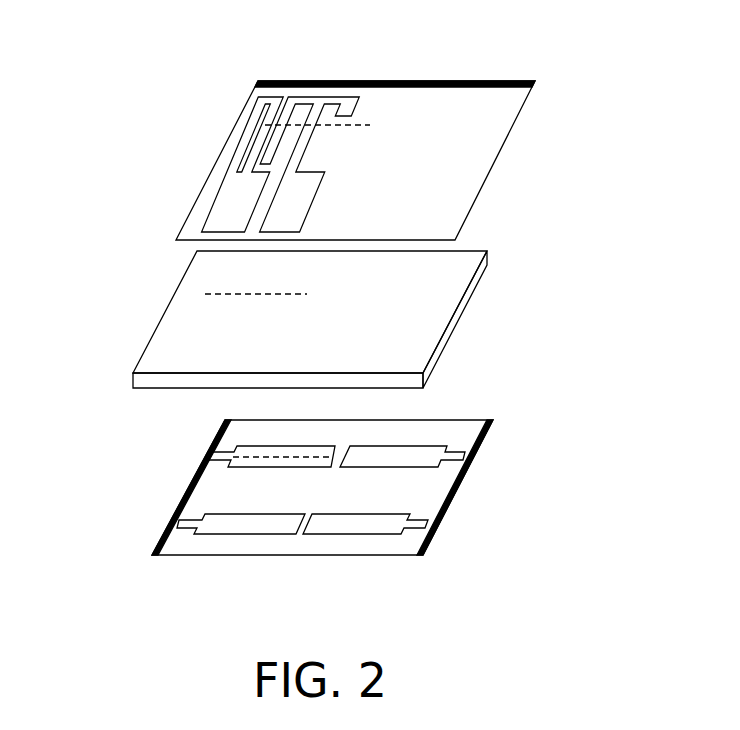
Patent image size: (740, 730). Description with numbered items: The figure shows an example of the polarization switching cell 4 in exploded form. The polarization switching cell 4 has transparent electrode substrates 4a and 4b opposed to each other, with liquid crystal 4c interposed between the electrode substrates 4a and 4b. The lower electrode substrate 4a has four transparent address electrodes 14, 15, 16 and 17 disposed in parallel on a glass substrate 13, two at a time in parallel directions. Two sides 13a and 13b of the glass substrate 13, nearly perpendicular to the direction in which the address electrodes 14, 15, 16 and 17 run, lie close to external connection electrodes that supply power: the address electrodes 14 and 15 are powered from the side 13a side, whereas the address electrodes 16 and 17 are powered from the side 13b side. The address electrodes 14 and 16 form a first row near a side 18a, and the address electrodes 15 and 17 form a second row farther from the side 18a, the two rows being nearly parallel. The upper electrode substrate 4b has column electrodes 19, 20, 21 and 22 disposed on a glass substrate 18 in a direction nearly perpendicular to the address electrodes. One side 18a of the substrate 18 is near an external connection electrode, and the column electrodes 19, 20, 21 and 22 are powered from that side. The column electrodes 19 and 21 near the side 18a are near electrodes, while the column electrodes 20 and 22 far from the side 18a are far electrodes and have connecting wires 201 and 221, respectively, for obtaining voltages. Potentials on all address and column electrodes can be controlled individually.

The polarization switching cell 4 is at (78, 220).
The transparent electrode substrate 4a is at (544, 506).
The transparent electrode substrate 4b is at (511, 138).
The liquid crystal 4c is at (465, 321).
The glass substrate 13 is at (255, 543).
The side 13a is at (193, 482).
The side 13b is at (465, 490).
The address electrode 14 is at (232, 452).
The address electrode 15 is at (178, 527).
The address electrode 16 is at (467, 452).
The address electrode 17 is at (429, 525).
The glass substrate 18 is at (476, 197).
The side 18a is at (322, 81).
The column electrode 19 is at (276, 106).
The column electrode 20 is at (228, 174).
The connecting wire 201 is at (243, 125).
The column electrode 21 is at (358, 108).
The column electrode 22 is at (318, 196).
The connecting wire 221 is at (287, 118).